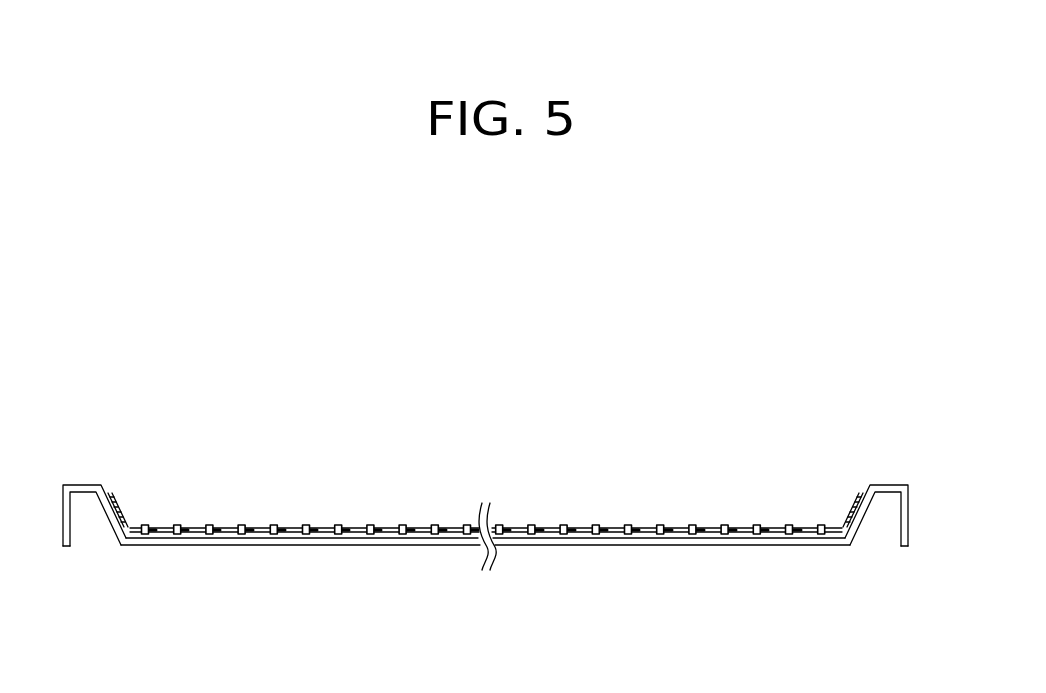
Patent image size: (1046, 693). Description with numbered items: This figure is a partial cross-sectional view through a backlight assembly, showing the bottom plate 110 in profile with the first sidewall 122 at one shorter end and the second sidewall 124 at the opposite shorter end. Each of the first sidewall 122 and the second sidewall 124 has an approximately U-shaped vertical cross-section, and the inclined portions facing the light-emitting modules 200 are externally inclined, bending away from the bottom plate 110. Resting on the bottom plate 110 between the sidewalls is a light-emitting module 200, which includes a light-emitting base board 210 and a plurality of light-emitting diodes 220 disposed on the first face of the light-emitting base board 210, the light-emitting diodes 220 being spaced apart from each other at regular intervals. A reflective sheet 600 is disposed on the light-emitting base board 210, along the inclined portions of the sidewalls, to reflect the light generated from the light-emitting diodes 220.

The bottom plate 110 is at (237, 547).
The first sidewall 122 is at (108, 514).
The second sidewall 124 is at (859, 517).
The light-emitting module 200 is at (486, 483).
The light-emitting base board 210 is at (773, 527).
The light-emitting diodes 220 is at (788, 462).
The reflective sheet 600 is at (118, 513).